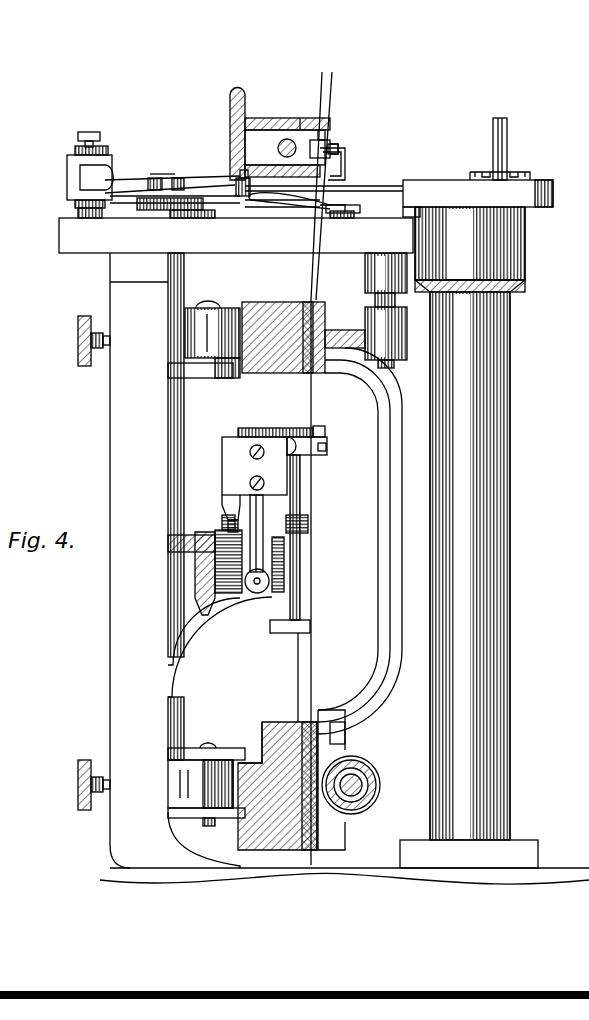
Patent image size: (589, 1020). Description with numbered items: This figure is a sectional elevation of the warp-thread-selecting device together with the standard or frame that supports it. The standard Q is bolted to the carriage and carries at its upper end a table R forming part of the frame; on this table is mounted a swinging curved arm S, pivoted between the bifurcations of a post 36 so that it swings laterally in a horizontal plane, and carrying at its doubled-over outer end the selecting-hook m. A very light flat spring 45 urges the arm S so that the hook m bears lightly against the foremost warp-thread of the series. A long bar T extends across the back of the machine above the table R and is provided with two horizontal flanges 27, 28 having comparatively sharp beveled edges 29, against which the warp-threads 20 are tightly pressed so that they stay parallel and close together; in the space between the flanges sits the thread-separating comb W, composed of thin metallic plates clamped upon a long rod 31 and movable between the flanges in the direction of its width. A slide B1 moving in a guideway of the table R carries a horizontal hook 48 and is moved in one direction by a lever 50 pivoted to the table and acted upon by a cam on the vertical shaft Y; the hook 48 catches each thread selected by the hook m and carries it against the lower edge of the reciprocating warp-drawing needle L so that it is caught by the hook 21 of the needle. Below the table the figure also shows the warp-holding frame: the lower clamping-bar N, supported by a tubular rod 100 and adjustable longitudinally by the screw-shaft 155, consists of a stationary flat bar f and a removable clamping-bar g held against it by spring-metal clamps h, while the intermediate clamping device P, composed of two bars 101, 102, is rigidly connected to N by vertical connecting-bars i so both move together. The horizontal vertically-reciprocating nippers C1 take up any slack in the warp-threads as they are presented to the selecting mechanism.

The post 36 is at (67, 169).
The flat spring 45 is at (128, 190).
The long bar T is at (230, 128).
The horizontal flange 28 is at (234, 170).
The horizontal flange 27 is at (260, 118).
The thread-separating comb W is at (288, 139).
The long rod 31 is at (314, 115).
The beveled edges 29 is at (320, 130).
The intermediate clamping device P is at (288, 302).
The selecting-hook m is at (340, 148).
The swinging curved arm S is at (347, 160).
The warp-drawing needle L is at (378, 187).
The lever 50 is at (335, 210).
The slide B1 is at (352, 212).
The table R is at (236, 235).
The hook 21 is at (278, 206).
The hook 48 is at (342, 218).
The vertical shaft Y is at (192, 713).
The bar 101 is at (252, 305).
The bar 102 is at (345, 302).
The warp-threads 20 is at (311, 415).
The nippers C1 is at (327, 446).
The vertical connecting-bars i is at (384, 502).
The standard Q is at (123, 560).
The lower clamping-bar N is at (277, 771).
The removable clamping-bar g is at (262, 730).
The stationary flat bar f is at (340, 733).
The tubular rod 100 is at (362, 766).
The screw-shaft 155 is at (362, 783).
The spring-metal clamps h is at (258, 824).